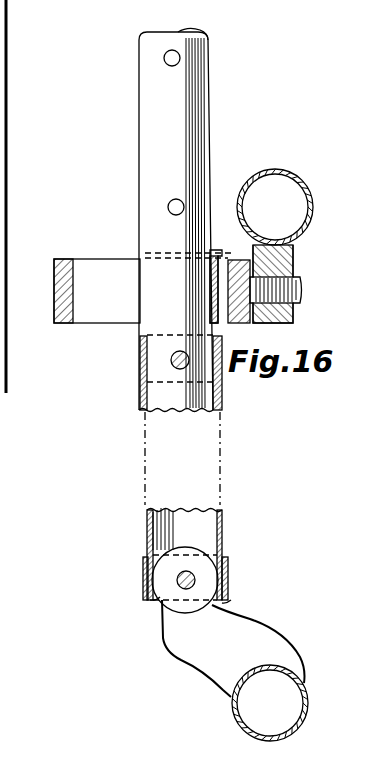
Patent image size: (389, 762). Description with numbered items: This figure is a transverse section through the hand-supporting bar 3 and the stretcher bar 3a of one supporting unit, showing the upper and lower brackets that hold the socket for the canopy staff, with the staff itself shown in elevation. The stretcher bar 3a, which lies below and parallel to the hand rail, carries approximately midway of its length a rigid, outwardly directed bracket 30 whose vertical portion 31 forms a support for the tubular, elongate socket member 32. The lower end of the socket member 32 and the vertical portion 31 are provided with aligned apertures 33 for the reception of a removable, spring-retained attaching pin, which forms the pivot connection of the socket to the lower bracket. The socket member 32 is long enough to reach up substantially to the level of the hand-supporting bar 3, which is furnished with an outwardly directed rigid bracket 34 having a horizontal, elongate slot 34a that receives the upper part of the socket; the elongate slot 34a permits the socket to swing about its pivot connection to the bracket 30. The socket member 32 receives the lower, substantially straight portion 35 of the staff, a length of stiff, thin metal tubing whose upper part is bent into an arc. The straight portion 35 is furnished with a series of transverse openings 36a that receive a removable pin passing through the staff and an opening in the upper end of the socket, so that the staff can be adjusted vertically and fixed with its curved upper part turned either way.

The hand-supporting bar 3 is at (301, 179).
The stretcher bar 3a is at (294, 740).
The bracket 30 is at (182, 652).
The vertical portion 31 is at (164, 606).
The socket member 32 is at (224, 532).
The apertures 33 is at (195, 578).
The bracket 34 is at (66, 312).
The elongate slot 34a is at (84, 266).
The lower straight portion of staff 35 is at (212, 168).
The transverse openings 36a is at (166, 65).